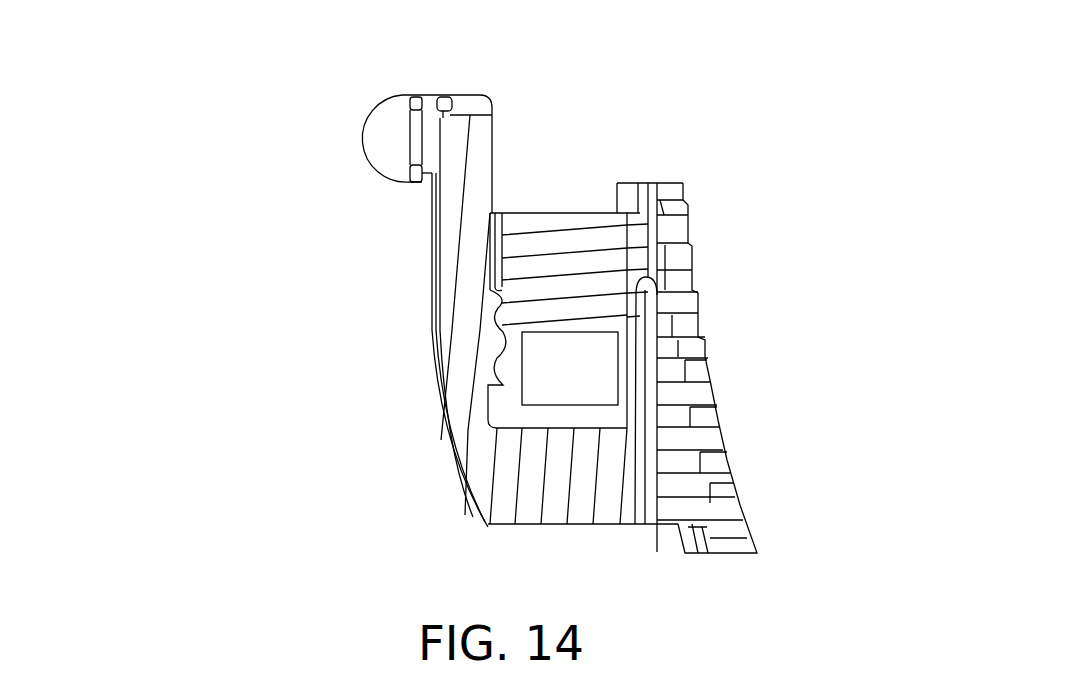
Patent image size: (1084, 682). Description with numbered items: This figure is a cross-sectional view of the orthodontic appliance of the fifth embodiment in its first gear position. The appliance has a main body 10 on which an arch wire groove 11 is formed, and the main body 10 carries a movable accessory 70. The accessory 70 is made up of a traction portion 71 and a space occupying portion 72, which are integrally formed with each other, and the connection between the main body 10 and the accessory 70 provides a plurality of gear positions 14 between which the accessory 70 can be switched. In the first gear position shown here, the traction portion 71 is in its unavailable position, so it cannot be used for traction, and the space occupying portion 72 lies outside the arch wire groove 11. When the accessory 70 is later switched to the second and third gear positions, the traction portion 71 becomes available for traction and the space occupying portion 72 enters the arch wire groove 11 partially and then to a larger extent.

The main body 10 is at (580, 280).
The arch wire groove 11 is at (580, 373).
The gear positions 14 is at (500, 300).
The accessory 70 is at (465, 353).
The traction portion 71 is at (470, 167).
The space occupying portion 72 is at (565, 440).